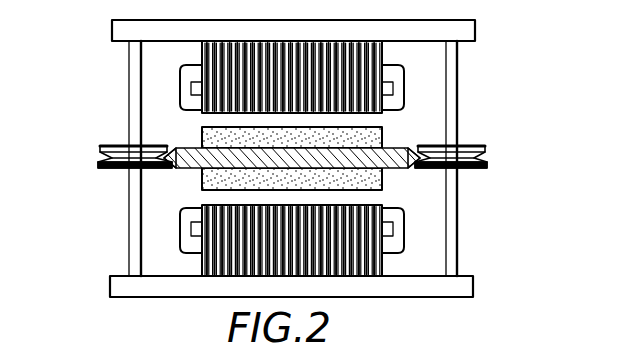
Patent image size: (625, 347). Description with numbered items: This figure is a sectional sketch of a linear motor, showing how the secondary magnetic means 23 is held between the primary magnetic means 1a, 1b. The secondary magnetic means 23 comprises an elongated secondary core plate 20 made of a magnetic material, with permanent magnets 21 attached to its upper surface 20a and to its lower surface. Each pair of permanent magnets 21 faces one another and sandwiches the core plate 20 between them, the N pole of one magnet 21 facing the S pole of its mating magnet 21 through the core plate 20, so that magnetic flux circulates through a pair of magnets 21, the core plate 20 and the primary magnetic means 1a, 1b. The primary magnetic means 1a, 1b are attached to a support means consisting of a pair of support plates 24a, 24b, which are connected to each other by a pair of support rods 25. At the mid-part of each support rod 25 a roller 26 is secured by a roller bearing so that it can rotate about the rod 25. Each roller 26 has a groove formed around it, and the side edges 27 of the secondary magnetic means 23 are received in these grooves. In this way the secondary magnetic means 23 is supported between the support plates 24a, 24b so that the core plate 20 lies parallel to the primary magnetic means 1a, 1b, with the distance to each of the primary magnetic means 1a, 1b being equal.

The primary magnetic means 1a is at (408, 86).
The primary magnetic means 1b is at (410, 239).
The secondary core plate 20 is at (187, 166).
The upper surface 20a is at (168, 152).
The permanent magnets 21 is at (383, 128).
The secondary magnetic means 23 is at (190, 134).
The support plate 24a is at (478, 20).
The support plate 24b is at (475, 298).
The support rods 25 is at (128, 90).
The roller 26 is at (106, 146).
The side edges 27 is at (158, 170).